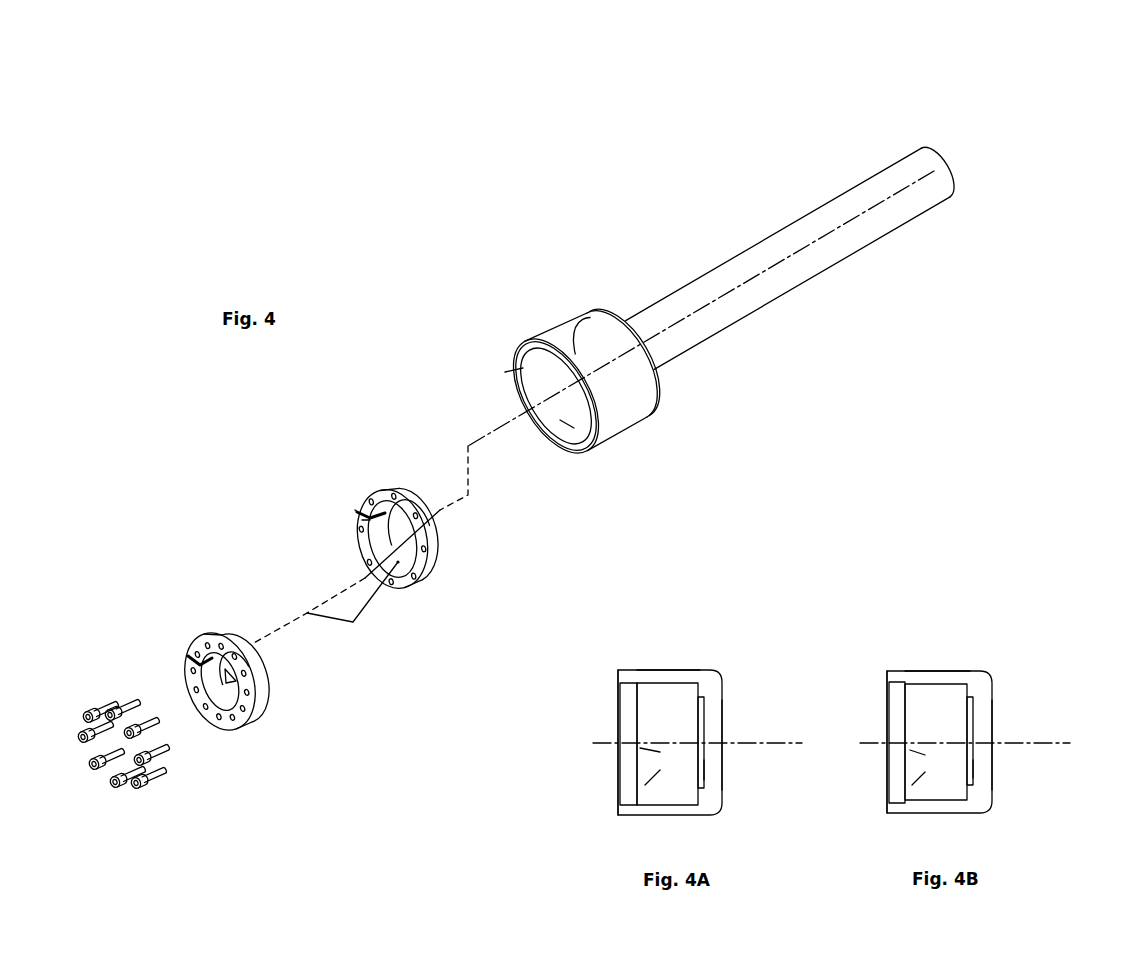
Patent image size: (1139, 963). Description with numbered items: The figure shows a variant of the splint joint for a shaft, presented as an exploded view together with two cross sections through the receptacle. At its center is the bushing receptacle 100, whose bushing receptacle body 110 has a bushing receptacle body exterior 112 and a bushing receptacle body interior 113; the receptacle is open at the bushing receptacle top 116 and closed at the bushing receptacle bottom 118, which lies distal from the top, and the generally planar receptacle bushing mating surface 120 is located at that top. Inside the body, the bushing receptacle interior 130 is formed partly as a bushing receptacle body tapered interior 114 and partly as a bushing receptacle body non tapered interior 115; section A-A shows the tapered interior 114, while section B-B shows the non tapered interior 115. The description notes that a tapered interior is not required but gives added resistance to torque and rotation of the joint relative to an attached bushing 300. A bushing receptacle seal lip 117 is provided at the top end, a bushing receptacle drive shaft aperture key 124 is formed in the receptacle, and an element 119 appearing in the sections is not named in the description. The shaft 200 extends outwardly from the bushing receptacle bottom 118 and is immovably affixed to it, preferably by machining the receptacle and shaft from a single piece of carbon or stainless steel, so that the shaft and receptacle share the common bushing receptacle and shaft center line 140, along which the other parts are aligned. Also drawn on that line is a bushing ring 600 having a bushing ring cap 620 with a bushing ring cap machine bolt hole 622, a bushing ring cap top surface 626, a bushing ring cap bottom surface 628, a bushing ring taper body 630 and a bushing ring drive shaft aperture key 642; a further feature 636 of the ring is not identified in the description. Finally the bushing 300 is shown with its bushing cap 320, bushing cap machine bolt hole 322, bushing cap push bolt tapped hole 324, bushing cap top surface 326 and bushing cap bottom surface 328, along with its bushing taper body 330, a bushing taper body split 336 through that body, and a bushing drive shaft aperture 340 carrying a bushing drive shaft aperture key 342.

In FIG. 4, the bushing receptacle 100 is at (501, 339).
In FIG. 4A, the bushing receptacle 100 is at (642, 693).
In FIG. 4B, the bushing receptacle 100 is at (946, 677).
In FIG. 4, the bushing receptacle body 110 is at (576, 327).
In FIG. 4A, the bushing receptacle body 110 is at (707, 670).
In FIG. 4B, the bushing receptacle body 110 is at (972, 673).
In FIG. 4A, the bushing receptacle body exterior 112 is at (683, 673).
In FIG. 4B, the bushing receptacle body exterior 112 is at (950, 672).
In FIG. 4, the bushing receptacle body interior 113 is at (570, 425).
In FIG. 4A, the bushing receptacle body interior 113 is at (642, 750).
In FIG. 4B, the bushing receptacle body interior 113 is at (912, 752).
In FIG. 4A, the bushing receptacle body tapered interior 114 is at (678, 685).
In FIG. 4, the bushing receptacle body non tapered interior 115 is at (557, 383).
In FIG. 4B, the bushing receptacle body non tapered interior 115 is at (930, 685).
In FIG. 4, the bushing receptacle top 116 is at (542, 345).
In FIG. 4A, the bushing receptacle top 116 is at (628, 673).
In FIG. 4B, the bushing receptacle top 116 is at (895, 672).
In FIG. 4, the bushing receptacle seal lip 117 is at (505, 372).
In FIG. 4A, the bushing receptacle seal lip 117 is at (627, 707).
In FIG. 4B, the bushing receptacle seal lip 117 is at (897, 725).
In FIG. 4, the bushing receptacle bottom 118 is at (628, 333).
In FIG. 4A, the bushing receptacle bottom 118 is at (720, 802).
In FIG. 4B, the bushing receptacle bottom 118 is at (988, 793).
In FIG. 4A, the insert plate 119 is at (700, 763).
In FIG. 4B, the insert plate 119 is at (968, 728).
In FIG. 4A, the receptacle bushing mating surface 120 is at (713, 770).
In FIG. 4B, the receptacle bushing mating surface 120 is at (982, 767).
In FIG. 4, the bushing receptacle drive shaft aperture key 124 is at (523, 368).
In FIG. 4, the bushing receptacle interior 130 is at (565, 410).
In FIG. 4A, the bushing receptacle interior 130 is at (652, 777).
In FIG. 4B, the bushing receptacle interior 130 is at (917, 778).
In FIG. 4, the bushing receptacle and shaft center line 140 is at (956, 162).
In FIG. 4A, the bushing receptacle and shaft center line 140 is at (735, 743).
In FIG. 4B, the bushing receptacle and shaft center line 140 is at (1048, 743).
In FIG. 4, the shaft 200 is at (805, 228).
In FIG. 4, the bushing 300 is at (218, 644).
In FIG. 4, the bushing cap 320 is at (210, 708).
In FIG. 4, the bushing cap machine bolt hole 322 is at (198, 640).
In FIG. 4, the bushing cap push bolt tapped hole 324 is at (218, 642).
In FIG. 4, the bushing cap top surface 326 is at (247, 717).
In FIG. 4, the bushing cap bottom surface 328 is at (247, 710).
In FIG. 4, the bushing taper body 330 is at (245, 652).
In FIG. 4, the bushing taper body split 336 is at (235, 640).
In FIG. 4, the bushing drive shaft aperture 340 is at (227, 697).
In FIG. 4, the bushing drive shaft aperture key 342 is at (193, 658).
In FIG. 4, the bushing ring 600 is at (340, 505).
In FIG. 4, the bushing ring cap 620 is at (360, 520).
In FIG. 4, the bushing ring cap machine bolt hole 622 is at (356, 512).
In FIG. 4, the bushing ring cap top surface 626 is at (391, 491).
In FIG. 4, the bushing ring cap bottom surface 628 is at (430, 519).
In FIG. 4, the bushing ring taper body 630 is at (353, 599).
In FIG. 4, the key tab 636 is at (360, 523).
In FIG. 4, the bushing ring drive shaft aperture key 642 is at (399, 582).